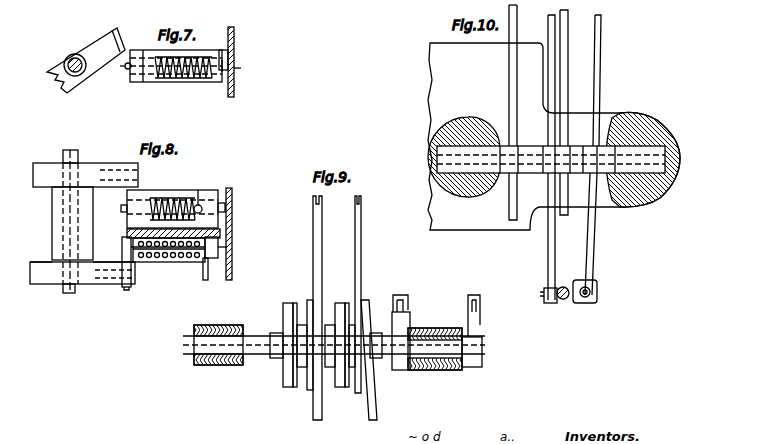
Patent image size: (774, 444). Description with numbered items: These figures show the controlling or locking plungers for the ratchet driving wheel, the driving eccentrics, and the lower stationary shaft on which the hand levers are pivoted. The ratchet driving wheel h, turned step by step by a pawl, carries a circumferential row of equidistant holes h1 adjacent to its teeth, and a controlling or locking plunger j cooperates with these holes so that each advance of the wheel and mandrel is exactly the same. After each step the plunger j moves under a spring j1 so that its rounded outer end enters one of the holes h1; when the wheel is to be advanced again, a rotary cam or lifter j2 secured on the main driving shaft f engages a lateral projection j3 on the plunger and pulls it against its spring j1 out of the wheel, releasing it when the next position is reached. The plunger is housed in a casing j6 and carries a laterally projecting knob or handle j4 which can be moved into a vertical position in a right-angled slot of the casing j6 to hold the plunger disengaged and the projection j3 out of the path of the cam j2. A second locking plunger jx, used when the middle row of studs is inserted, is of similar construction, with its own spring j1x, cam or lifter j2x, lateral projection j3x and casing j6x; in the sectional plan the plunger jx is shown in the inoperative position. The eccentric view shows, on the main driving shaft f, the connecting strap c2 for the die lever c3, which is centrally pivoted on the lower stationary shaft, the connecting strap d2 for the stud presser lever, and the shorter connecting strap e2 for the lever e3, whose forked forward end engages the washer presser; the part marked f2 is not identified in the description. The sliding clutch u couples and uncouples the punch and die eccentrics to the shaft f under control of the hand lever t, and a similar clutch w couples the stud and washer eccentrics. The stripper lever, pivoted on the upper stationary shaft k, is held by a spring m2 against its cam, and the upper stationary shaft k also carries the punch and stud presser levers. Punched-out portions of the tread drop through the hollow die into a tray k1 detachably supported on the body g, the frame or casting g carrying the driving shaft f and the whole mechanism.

In FIG. 7, the rotary cam or lifter j2 is at (110, 33).
In FIG. 8, the rotary cam or lifter j2 is at (128, 284).
In FIG. 9, the rotary cam or lifter j2 is at (474, 298).
In FIG. 7, the casing j6 is at (152, 54).
In FIG. 8, the casing j6 is at (122, 242).
In FIG. 7, the spring j1 is at (200, 60).
In FIG. 8, the spring j1 is at (178, 262).
In FIG. 7, the lateral projection j3 is at (126, 70).
In FIG. 8, the lateral projection j3 is at (122, 260).
In FIG. 7, the upper stationary shaft k is at (236, 48).
In FIG. 8, the upper stationary shaft k is at (233, 262).
In FIG. 7, the tray k1 is at (240, 66).
In FIG. 7, the controlling or locking plunger j is at (236, 66).
In FIG. 8, the controlling or locking plunger j is at (232, 232).
In FIG. 8, the main driving shaft f is at (80, 162).
In FIG. 9, the main driving shaft f is at (262, 344).
In FIG. 8, the second rotary cam or lifter j2x is at (150, 190).
In FIG. 9, the second rotary cam or lifter j2x is at (404, 298).
In FIG. 8, the second plunger spring j1x is at (178, 200).
In FIG. 8, the second plunger casing j6x is at (200, 204).
In FIG. 8, the second lateral projection j3x is at (121, 208).
In FIG. 8, the knob or handle j4 is at (204, 280).
In FIG. 8, the second locking plunger jx is at (232, 200).
In FIG. 8, the ratchet driving wheel h is at (232, 212).
In FIG. 8, the holes h1 is at (232, 248).
In FIG. 9, the frame or casting g is at (228, 366).
In FIG. 10, the frame or casting g is at (654, 121).
In FIG. 9, the clutch u is at (288, 375).
In FIG. 9, the connecting strap c2 is at (312, 388).
In FIG. 9, the lever f2 is at (313, 232).
In FIG. 9, the spring m2 is at (316, 312).
In FIG. 9, the clutch w is at (342, 388).
In FIG. 10, the clutch w is at (566, 188).
In FIG. 9, the connecting strap d2 is at (361, 248).
In FIG. 9, the connecting strap e2 is at (374, 402).
In FIG. 10, the hand lever t is at (660, 154).
In FIG. 10, the die lever c3 is at (548, 236).
In FIG. 10, the washer presser lever e3 is at (592, 250).